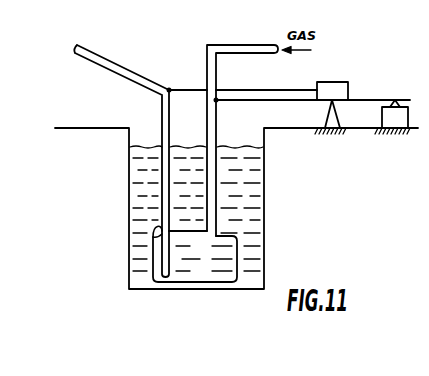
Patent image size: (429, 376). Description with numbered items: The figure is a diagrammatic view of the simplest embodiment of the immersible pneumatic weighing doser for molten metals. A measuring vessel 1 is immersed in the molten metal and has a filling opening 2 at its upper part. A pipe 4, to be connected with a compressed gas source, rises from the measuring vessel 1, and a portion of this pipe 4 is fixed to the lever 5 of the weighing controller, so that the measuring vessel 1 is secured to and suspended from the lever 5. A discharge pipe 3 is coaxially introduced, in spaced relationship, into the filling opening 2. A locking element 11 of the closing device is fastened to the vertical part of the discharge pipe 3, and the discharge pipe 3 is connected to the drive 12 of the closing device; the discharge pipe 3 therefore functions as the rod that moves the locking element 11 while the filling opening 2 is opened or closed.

The measuring vessel 1 is at (237, 262).
The filling opening 2 is at (153, 238).
The discharge pipe 3 is at (121, 70).
The pipe 4 is at (218, 160).
The lever 5 is at (272, 99).
The locking element 11 is at (161, 224).
The drive 12 is at (179, 89).